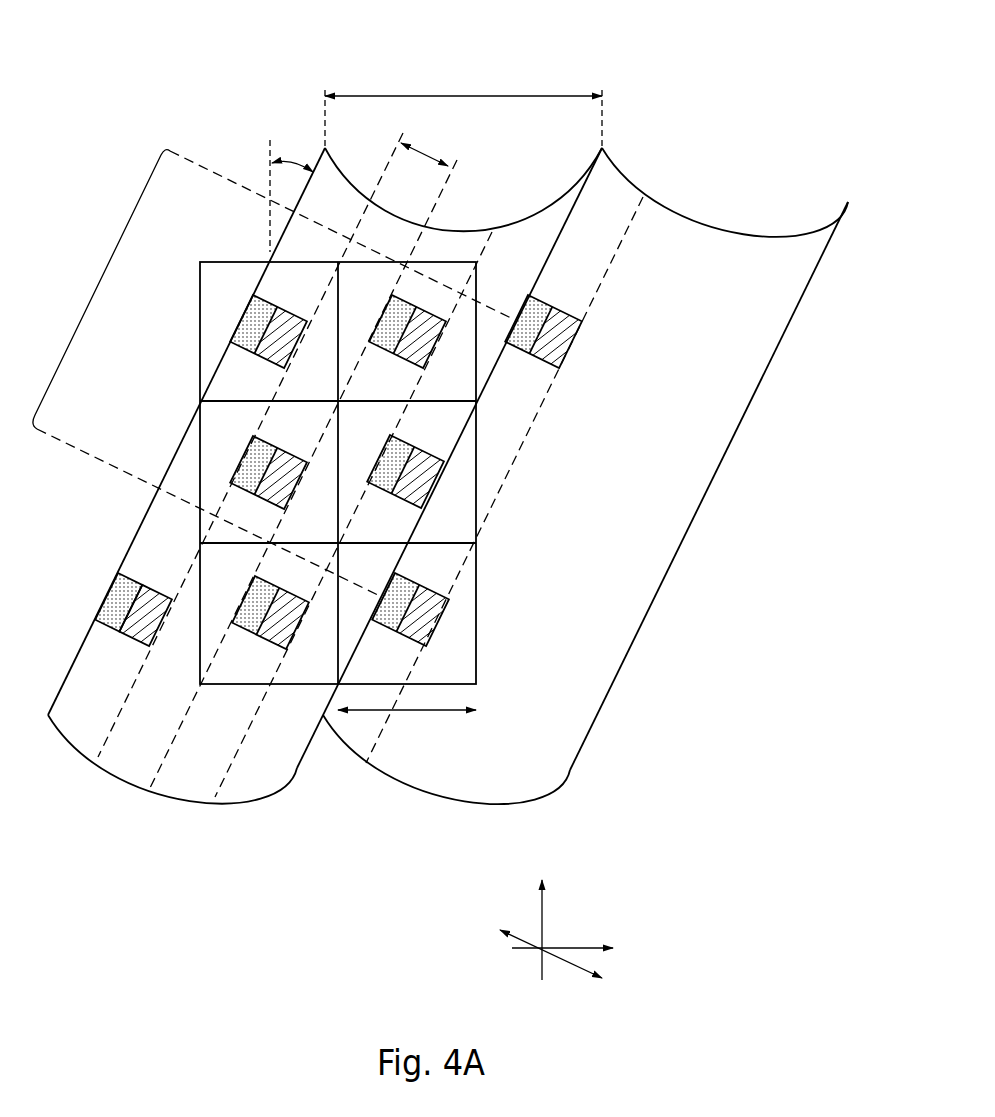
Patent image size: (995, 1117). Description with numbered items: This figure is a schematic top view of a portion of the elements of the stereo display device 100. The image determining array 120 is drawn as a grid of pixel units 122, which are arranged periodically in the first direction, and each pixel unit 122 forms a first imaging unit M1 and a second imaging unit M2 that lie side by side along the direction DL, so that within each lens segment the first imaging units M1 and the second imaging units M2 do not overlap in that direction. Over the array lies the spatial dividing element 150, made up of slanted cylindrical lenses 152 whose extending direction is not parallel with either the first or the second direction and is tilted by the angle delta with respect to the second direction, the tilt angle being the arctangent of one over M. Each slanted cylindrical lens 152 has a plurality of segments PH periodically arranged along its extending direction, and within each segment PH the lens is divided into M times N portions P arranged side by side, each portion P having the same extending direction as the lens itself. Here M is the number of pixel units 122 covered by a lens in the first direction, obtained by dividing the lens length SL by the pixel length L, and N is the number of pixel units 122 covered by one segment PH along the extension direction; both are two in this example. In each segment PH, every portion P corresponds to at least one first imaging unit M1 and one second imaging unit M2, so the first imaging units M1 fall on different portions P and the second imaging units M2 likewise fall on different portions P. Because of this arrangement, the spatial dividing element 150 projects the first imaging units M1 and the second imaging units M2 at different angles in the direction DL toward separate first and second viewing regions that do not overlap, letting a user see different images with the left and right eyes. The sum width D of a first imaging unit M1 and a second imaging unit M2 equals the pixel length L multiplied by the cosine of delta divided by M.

The stereo display device 100 is at (78, 32).
The image determining array 120 is at (325, 473).
The pixel unit 122 is at (204, 271).
The spatial dividing element 150 is at (448, 529).
The slanted cylindrical lens 152 is at (398, 877).
The portion P is at (73, 733).
The segment PH is at (93, 283).
The first imaging unit M1 is at (141, 611).
The second imaging unit M2 is at (118, 587).